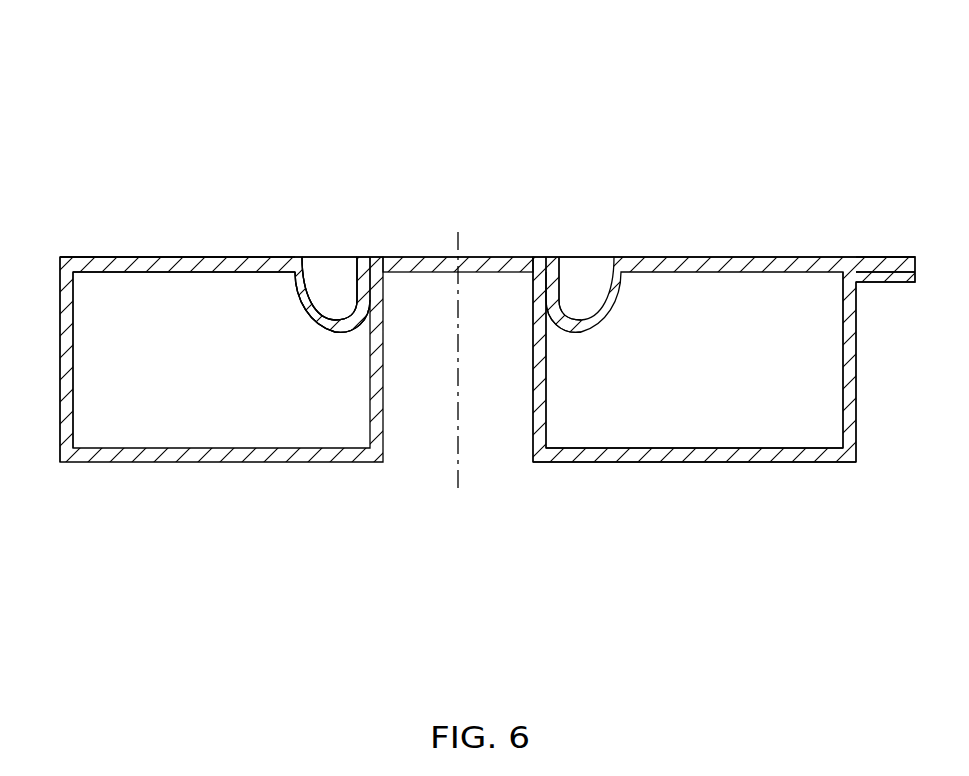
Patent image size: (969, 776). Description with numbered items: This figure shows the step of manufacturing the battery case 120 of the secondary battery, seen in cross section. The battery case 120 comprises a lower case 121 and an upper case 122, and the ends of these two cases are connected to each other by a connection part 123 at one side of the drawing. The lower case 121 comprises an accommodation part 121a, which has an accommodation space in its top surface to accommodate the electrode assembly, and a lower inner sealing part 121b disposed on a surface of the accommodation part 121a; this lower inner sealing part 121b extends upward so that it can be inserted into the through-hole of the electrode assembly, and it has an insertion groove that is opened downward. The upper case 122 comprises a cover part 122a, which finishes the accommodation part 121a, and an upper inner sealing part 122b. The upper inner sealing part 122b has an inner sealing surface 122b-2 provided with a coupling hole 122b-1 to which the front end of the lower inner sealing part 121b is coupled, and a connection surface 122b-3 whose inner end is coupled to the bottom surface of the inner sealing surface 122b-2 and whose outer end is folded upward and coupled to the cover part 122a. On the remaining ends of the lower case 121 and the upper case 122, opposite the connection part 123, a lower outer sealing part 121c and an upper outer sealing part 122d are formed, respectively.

The battery case 120 is at (768, 100).
The lower case 121 is at (885, 543).
The accommodation part 121a is at (673, 457).
The lower inner sealing part 121b is at (533, 432).
The lower outer sealing part 121c is at (883, 278).
The upper case 122 is at (172, 131).
The cover part 122a is at (178, 263).
The upper inner sealing part 122b is at (410, 180).
The coupling hole 122b-1 is at (537, 290).
The inner sealing surface 122b-2 is at (365, 263).
The connection surface 122b-3 is at (330, 263).
The upper outer sealing part 122d is at (864, 263).
The connection part 123 is at (62, 257).